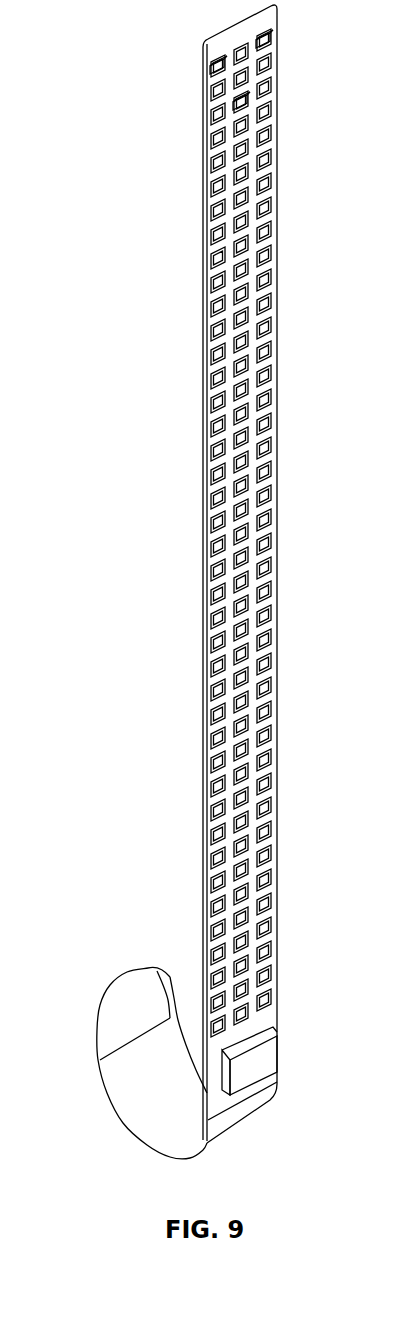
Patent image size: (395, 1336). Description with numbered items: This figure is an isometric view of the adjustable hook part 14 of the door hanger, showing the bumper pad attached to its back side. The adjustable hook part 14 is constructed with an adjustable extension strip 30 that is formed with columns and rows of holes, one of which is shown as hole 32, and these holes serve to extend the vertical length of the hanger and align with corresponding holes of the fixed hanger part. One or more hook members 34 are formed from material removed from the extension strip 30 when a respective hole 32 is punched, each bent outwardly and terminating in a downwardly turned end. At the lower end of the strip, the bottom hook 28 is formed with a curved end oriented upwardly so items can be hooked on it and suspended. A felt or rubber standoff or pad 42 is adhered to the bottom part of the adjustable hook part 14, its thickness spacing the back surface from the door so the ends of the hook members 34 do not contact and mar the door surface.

The adjustable hook part 14 is at (304, 300).
The bottom hook 28 is at (90, 970).
The adjustable extension strip 30 is at (282, 477).
The hole 32 is at (270, 222).
The hook member 34 is at (269, 45).
The pad 42 is at (254, 1061).